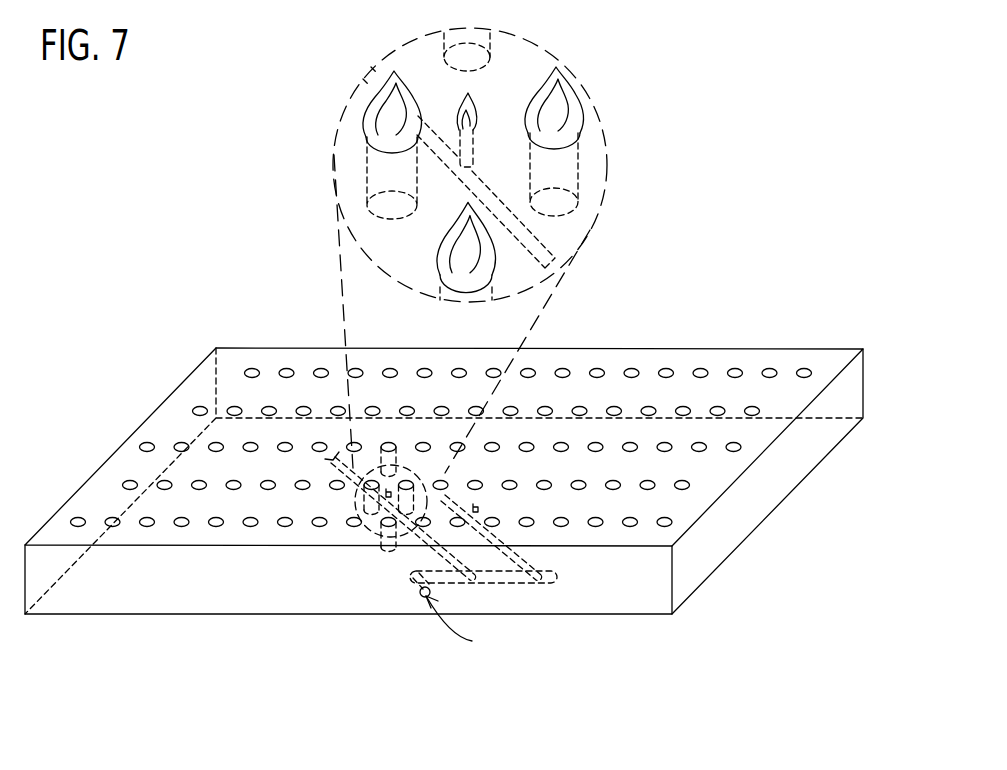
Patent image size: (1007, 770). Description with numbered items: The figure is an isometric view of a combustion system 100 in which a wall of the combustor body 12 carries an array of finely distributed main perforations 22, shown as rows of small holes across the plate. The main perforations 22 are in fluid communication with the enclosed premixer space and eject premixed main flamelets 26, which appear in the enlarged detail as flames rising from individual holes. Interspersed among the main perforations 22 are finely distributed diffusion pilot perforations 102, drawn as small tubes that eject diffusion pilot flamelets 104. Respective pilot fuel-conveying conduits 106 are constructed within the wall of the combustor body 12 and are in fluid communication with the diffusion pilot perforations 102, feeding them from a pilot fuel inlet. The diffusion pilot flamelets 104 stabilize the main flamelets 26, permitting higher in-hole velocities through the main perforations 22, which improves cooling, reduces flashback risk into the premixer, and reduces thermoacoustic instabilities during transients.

The burner assembly 100 is at (756, 281).
The combustor body 12 is at (218, 582).
The main perforations 22 is at (146, 440).
The premixed main flamelets 26 is at (390, 125).
The diffusion pilot perforations 102 is at (470, 137).
The diffusion pilot flamelets 104 is at (468, 107).
The pilot fuel-conveying conduits 106 is at (543, 243).